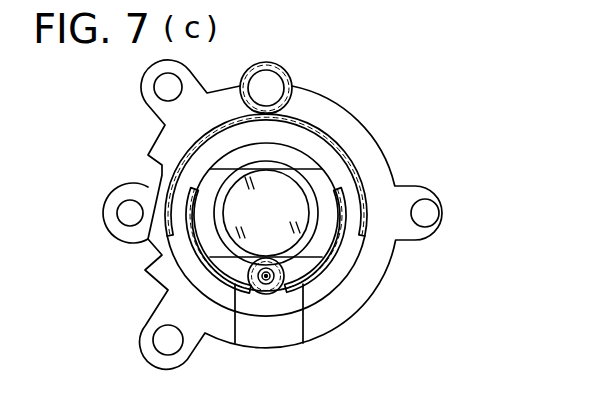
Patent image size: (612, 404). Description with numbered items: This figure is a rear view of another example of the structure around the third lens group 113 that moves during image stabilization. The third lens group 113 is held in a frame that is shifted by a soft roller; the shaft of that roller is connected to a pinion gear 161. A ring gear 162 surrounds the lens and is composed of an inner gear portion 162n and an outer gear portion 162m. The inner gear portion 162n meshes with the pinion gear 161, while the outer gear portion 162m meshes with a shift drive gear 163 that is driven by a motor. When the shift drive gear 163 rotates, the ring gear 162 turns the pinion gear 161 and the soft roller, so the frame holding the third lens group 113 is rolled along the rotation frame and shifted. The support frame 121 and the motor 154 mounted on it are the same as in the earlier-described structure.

The third lens group 113 is at (292, 207).
The support frame 121 is at (368, 167).
The motor 154 is at (112, 186).
The pinion gear 161 is at (303, 343).
The ring gear 162 is at (328, 158).
The outer gear portion 162m is at (318, 130).
The inner gear portion 162n is at (235, 343).
The shift drive gear 163 is at (286, 74).